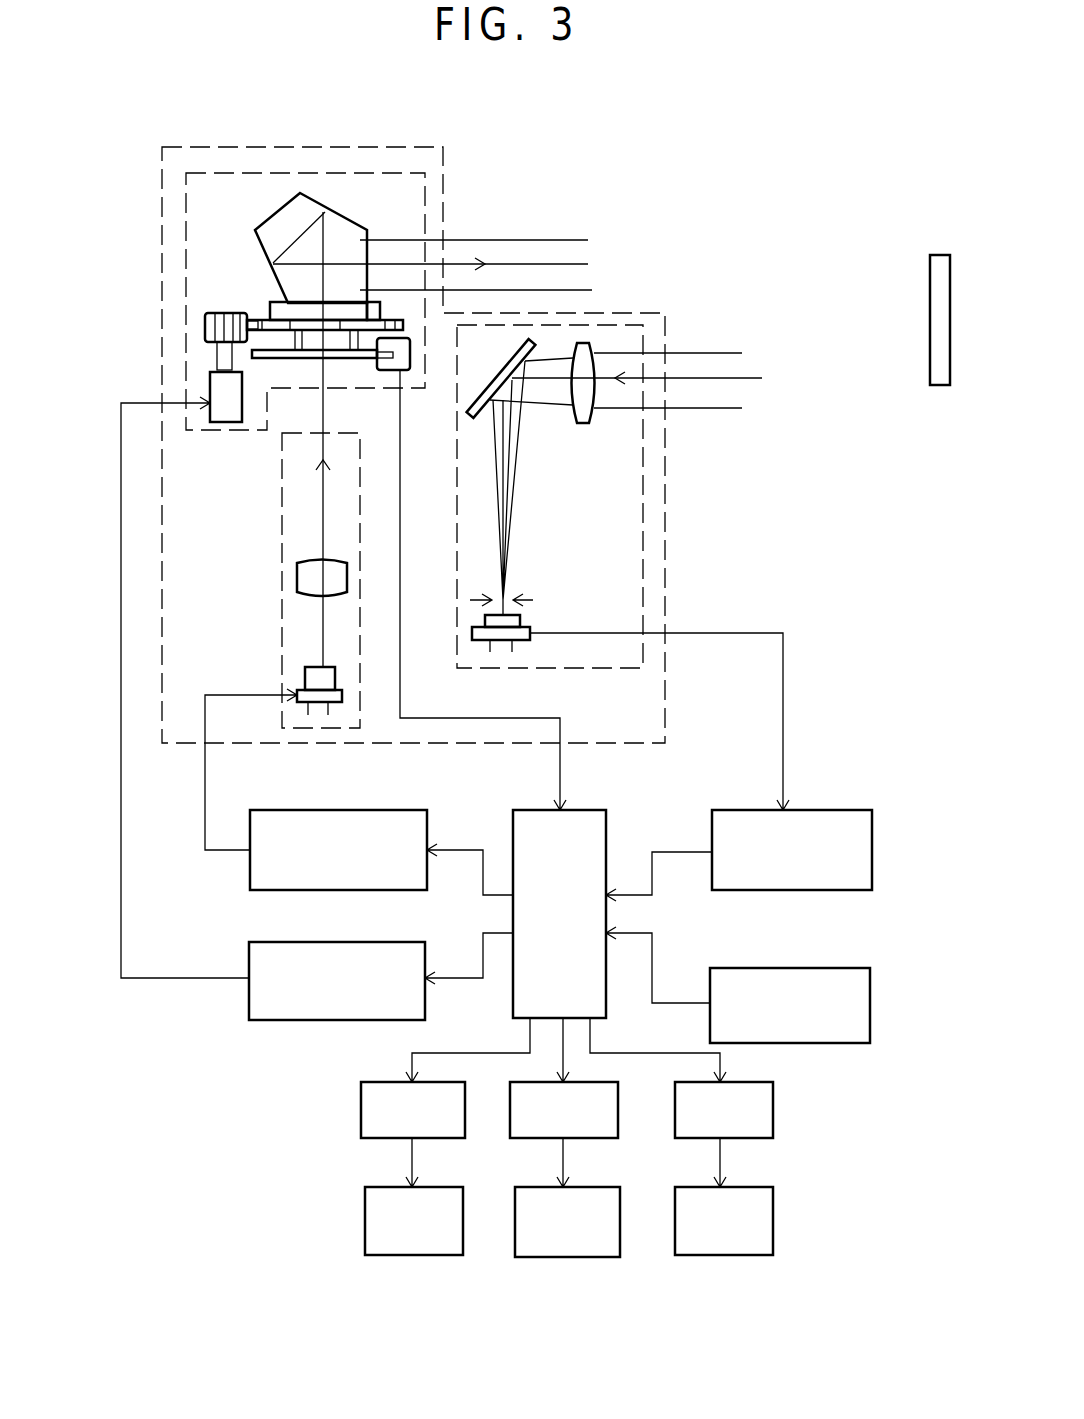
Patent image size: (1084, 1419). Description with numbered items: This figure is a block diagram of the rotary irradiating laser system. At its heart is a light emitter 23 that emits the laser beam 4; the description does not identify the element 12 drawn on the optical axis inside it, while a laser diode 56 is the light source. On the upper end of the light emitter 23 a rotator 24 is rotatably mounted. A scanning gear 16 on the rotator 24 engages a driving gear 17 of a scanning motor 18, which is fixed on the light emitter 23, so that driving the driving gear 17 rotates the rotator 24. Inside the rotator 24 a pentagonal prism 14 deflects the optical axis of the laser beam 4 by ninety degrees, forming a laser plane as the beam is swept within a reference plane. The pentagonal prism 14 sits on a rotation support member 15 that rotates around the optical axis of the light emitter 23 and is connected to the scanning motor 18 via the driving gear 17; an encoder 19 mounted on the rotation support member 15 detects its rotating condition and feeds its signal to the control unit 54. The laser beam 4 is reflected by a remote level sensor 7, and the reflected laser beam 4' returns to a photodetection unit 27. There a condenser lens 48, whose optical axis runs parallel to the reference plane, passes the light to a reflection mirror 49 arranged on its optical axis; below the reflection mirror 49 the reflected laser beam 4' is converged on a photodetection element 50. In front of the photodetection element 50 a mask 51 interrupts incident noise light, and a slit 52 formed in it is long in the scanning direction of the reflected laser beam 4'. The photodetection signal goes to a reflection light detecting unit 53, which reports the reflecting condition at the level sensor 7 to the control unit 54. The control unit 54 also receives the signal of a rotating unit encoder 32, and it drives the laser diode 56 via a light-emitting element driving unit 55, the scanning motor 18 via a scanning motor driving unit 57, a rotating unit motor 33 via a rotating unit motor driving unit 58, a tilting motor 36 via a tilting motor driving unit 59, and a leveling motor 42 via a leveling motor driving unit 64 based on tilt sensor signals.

The laser beam 4 is at (478, 224).
The reflected laser beam 4' is at (626, 412).
The level sensor 7 is at (930, 358).
The collimating lens 12 is at (303, 562).
The pentagonal prism 14 is at (283, 203).
The rotation support member 15 is at (375, 303).
The scanning gear 16 is at (257, 317).
The driving gear 17 is at (225, 313).
The scanning motor 18 is at (210, 383).
The encoder 19 is at (383, 375).
The light emitter 23 is at (282, 463).
The rotator 24 is at (363, 170).
The photodetection unit 27 is at (643, 587).
The rotating unit encoder 32 is at (797, 968).
The rotating unit motor 33 is at (775, 1235).
The tilting motor 36 is at (583, 1257).
The leveling motor 42 is at (365, 1237).
The condenser lens 48 is at (587, 343).
The reflection mirror 49 is at (530, 340).
The photodetection element 50 is at (530, 640).
The mask 51 is at (532, 602).
The slit 52 is at (505, 598).
The reflection light detecting unit 53 is at (788, 892).
The control unit 54 is at (607, 840).
The light-emitting element driving unit 55 is at (345, 810).
The laser diode 56 is at (310, 667).
The scanning motor driving unit 57 is at (278, 942).
The rotating unit motor driving unit 58 is at (775, 1120).
The tilting motor driving unit 59 is at (542, 1140).
The leveling motor driving unit 64 is at (360, 1108).